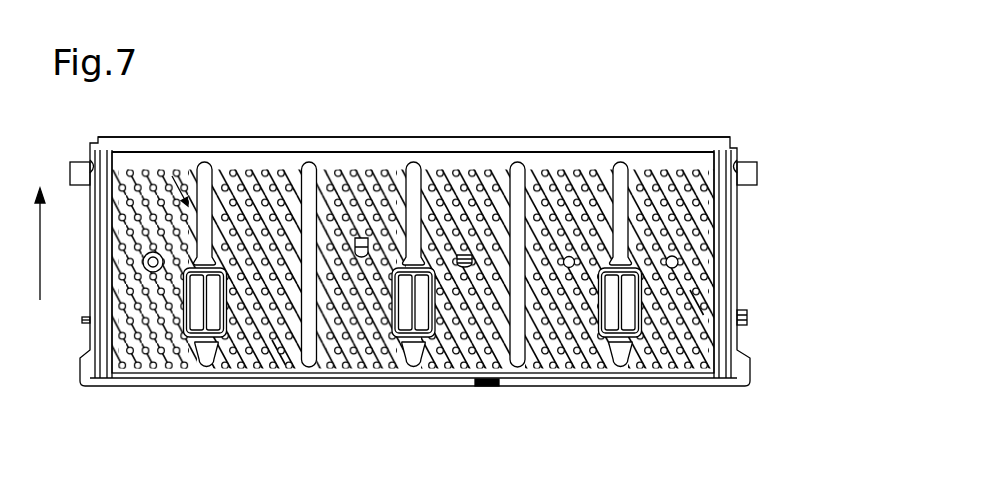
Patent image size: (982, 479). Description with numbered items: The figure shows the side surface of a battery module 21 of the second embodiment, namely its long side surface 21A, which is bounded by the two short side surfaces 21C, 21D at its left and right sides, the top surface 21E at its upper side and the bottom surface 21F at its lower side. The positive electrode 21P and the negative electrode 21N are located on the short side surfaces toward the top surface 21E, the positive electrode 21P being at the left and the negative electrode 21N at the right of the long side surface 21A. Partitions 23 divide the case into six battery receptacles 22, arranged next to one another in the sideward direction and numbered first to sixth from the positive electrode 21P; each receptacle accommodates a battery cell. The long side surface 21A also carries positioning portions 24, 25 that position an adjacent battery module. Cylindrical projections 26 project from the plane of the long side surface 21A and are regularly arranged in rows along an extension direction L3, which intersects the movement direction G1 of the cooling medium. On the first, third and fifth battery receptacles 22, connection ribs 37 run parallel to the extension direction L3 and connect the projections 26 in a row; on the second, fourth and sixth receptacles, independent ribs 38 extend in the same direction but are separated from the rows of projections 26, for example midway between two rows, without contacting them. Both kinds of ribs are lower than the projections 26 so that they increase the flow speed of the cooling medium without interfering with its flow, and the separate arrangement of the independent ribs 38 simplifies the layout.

The battery module 21 is at (702, 137).
The long side surface 21A is at (708, 205).
The short side surface 21C is at (737, 240).
The short side surface 21D is at (90, 247).
The top surface 21E is at (440, 137).
The bottom surface 21F is at (443, 388).
The negative electrode 21N is at (746, 162).
The positive electrode 21P is at (80, 162).
The battery receptacle 22 is at (147, 352).
The partition 23 is at (207, 362).
The positioning portion 24 is at (144, 258).
The positioning portion 25 is at (679, 262).
The projection 26 is at (705, 306).
The connection rib 37 is at (162, 178).
The independent rib 38 is at (288, 180).
The movement direction G1 is at (29, 244).
The extension direction L3 is at (191, 177).